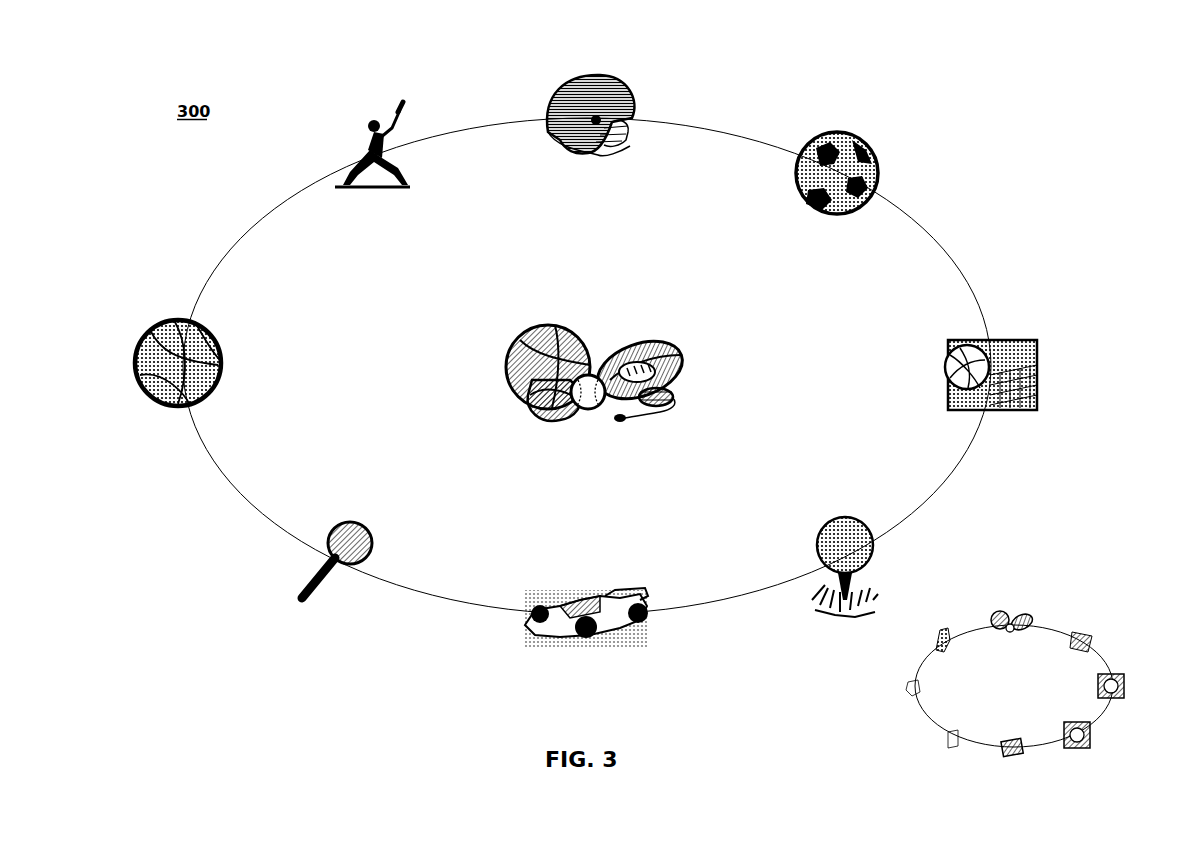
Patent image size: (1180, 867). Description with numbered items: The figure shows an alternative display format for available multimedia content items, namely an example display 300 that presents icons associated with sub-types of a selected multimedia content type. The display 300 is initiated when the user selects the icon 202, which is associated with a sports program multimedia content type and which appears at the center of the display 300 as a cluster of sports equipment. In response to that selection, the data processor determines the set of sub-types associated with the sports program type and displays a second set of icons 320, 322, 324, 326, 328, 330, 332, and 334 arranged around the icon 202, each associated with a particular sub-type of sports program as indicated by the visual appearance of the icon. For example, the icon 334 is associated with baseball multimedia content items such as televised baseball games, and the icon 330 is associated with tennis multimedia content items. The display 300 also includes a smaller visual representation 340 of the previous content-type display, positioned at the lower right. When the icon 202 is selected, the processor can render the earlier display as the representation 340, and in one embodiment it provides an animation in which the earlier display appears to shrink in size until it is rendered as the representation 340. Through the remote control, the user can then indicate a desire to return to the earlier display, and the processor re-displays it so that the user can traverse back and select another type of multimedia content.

The display 300 is at (587, 366).
The icon 202 is at (663, 340).
The icon 320 is at (588, 76).
The icon 322 is at (863, 142).
The icon 324 is at (1000, 340).
The icon 326 is at (873, 545).
The icon 328 is at (642, 648).
The icon 330 is at (372, 528).
The icon 332 is at (195, 322).
The icon 334 is at (392, 142).
The visual representation 340 is at (1054, 627).